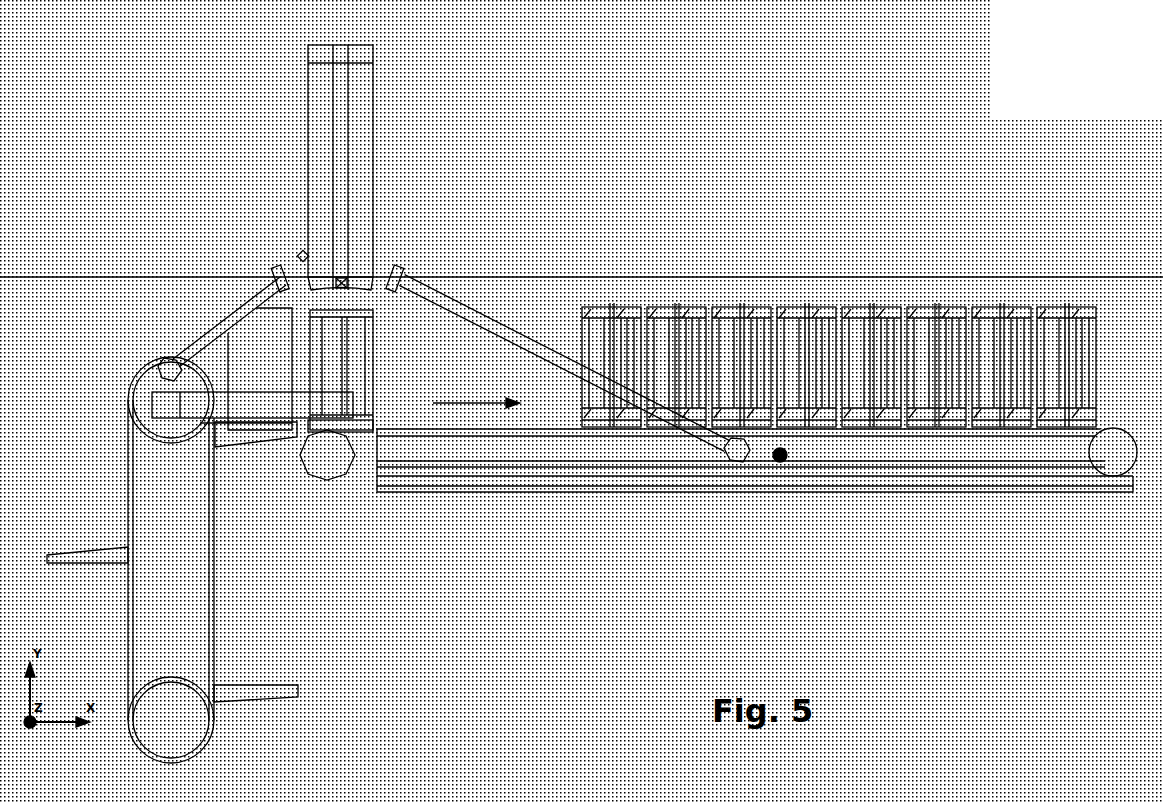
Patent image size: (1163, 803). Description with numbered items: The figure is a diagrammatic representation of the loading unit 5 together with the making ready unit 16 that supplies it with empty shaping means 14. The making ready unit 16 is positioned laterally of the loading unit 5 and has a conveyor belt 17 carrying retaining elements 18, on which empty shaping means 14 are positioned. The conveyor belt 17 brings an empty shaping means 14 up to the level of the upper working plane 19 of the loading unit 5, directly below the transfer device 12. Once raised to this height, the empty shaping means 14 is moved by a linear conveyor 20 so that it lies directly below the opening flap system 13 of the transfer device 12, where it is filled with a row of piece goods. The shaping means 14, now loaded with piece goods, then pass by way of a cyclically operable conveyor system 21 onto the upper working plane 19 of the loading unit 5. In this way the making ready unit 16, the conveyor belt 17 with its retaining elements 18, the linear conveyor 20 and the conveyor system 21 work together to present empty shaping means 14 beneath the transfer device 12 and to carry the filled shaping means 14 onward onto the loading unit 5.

The loading unit 5 is at (995, 217).
The transfer device 12 is at (372, 160).
The opening flap system 13 is at (296, 270).
The shaping means 14 is at (260, 369).
The making ready unit 16 is at (171, 560).
The conveyor belt 17 is at (116, 485).
The retaining elements 18 is at (262, 545).
The upper working plane 19 is at (776, 461).
The linear conveyor 20 is at (215, 396).
The cyclically operable conveyor system 21 is at (839, 433).